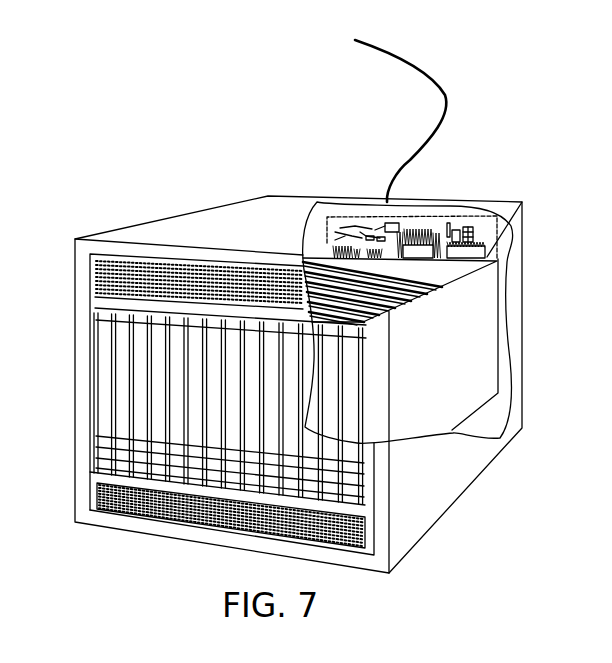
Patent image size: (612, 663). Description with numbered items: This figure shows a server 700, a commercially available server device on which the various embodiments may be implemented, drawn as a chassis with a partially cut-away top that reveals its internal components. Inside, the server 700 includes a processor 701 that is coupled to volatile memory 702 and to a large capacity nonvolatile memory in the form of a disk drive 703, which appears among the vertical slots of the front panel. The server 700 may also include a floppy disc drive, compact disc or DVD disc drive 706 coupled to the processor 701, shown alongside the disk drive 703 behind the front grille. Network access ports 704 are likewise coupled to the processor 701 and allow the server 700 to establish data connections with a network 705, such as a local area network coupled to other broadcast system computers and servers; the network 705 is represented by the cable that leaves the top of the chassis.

The server 700 is at (213, 207).
The processor 701 is at (418, 250).
The volatile memory 702 is at (481, 256).
The disk drive 703 is at (140, 356).
The network access ports 704 is at (328, 253).
The network 705 is at (446, 99).
The disc drive 706 is at (118, 380).